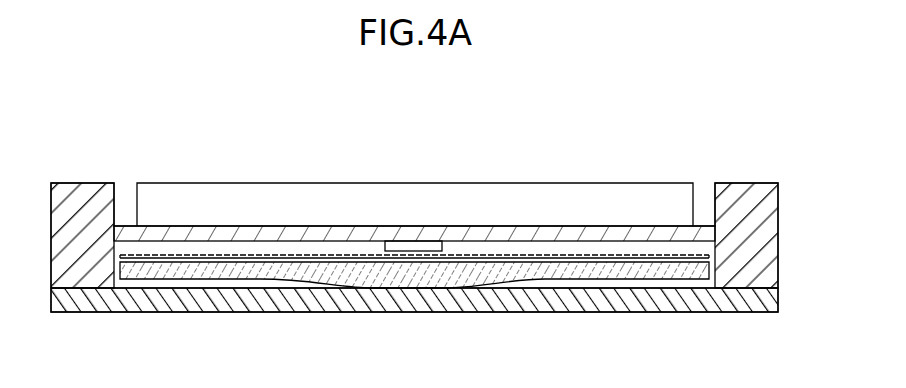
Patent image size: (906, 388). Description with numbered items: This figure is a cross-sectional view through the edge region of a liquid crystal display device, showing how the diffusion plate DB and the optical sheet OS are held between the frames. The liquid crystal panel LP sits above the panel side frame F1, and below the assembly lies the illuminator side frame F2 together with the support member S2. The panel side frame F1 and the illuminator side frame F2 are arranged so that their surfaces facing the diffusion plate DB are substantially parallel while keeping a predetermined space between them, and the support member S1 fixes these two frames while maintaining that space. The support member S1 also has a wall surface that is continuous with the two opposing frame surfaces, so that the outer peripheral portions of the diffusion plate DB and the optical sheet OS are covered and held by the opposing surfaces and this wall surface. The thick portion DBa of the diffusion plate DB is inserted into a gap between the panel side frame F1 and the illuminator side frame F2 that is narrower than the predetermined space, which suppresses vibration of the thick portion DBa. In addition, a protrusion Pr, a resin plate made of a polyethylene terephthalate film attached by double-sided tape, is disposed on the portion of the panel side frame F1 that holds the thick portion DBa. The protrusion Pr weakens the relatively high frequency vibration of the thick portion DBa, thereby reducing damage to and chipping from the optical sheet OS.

The support member S1 is at (745, 184).
The support member S2 is at (735, 313).
The panel side frame F1 is at (540, 233).
The illuminator side frame F2 is at (542, 297).
The liquid crystal panel LP is at (637, 192).
The protrusion Pr is at (407, 246).
The optical sheet OS is at (120, 256).
The diffusion plate DB is at (189, 268).
The thick portion DBa is at (373, 286).